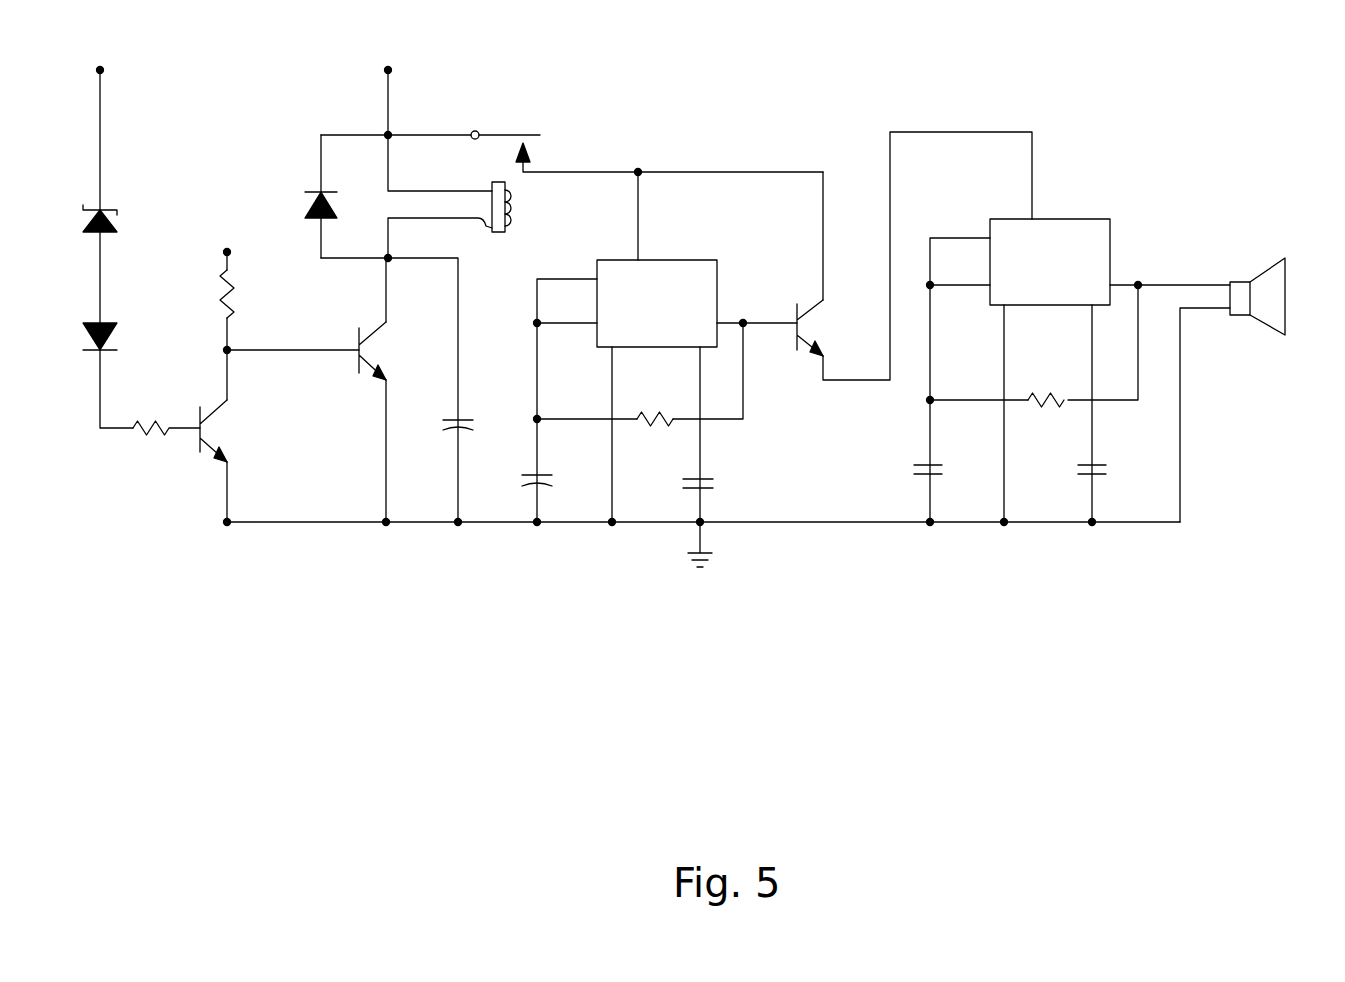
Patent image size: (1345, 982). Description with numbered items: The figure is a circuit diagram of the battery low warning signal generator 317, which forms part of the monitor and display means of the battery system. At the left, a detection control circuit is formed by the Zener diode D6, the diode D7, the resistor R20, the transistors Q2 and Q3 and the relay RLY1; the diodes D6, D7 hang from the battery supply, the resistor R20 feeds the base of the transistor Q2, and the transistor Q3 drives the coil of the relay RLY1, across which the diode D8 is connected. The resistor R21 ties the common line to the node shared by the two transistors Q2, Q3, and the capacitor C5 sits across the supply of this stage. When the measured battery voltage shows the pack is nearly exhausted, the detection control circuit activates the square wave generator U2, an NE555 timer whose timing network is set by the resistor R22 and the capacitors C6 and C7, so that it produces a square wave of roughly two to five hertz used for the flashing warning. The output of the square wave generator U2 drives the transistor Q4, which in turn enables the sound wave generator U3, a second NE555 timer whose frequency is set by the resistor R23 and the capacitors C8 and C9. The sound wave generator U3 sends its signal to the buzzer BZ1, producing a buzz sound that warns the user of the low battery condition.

The battery low warning signal generator 317 is at (693, 365).
The Zenor diode D6 is at (111, 204).
The diode D7 is at (111, 320).
The resistor R20 is at (164, 445).
The resistor R21 is at (258, 294).
The transistor Q2 is at (234, 431).
The transistor Q3 is at (392, 351).
The diode D8 is at (310, 192).
The relay RLY1 is at (505, 165).
The capacitor C5 is at (473, 417).
The capacitor C6 is at (555, 475).
The square wave generator U2 is at (657, 288).
The resistor R22 is at (659, 436).
The capacitor C7 is at (718, 484).
The transistor Q4 is at (830, 328).
The sound wave generator U3 is at (1052, 245).
The resistor R23 is at (1051, 417).
The capacitor C8 is at (948, 471).
The capacitor C9 is at (1113, 471).
The buzzer BZ1 is at (1260, 276).